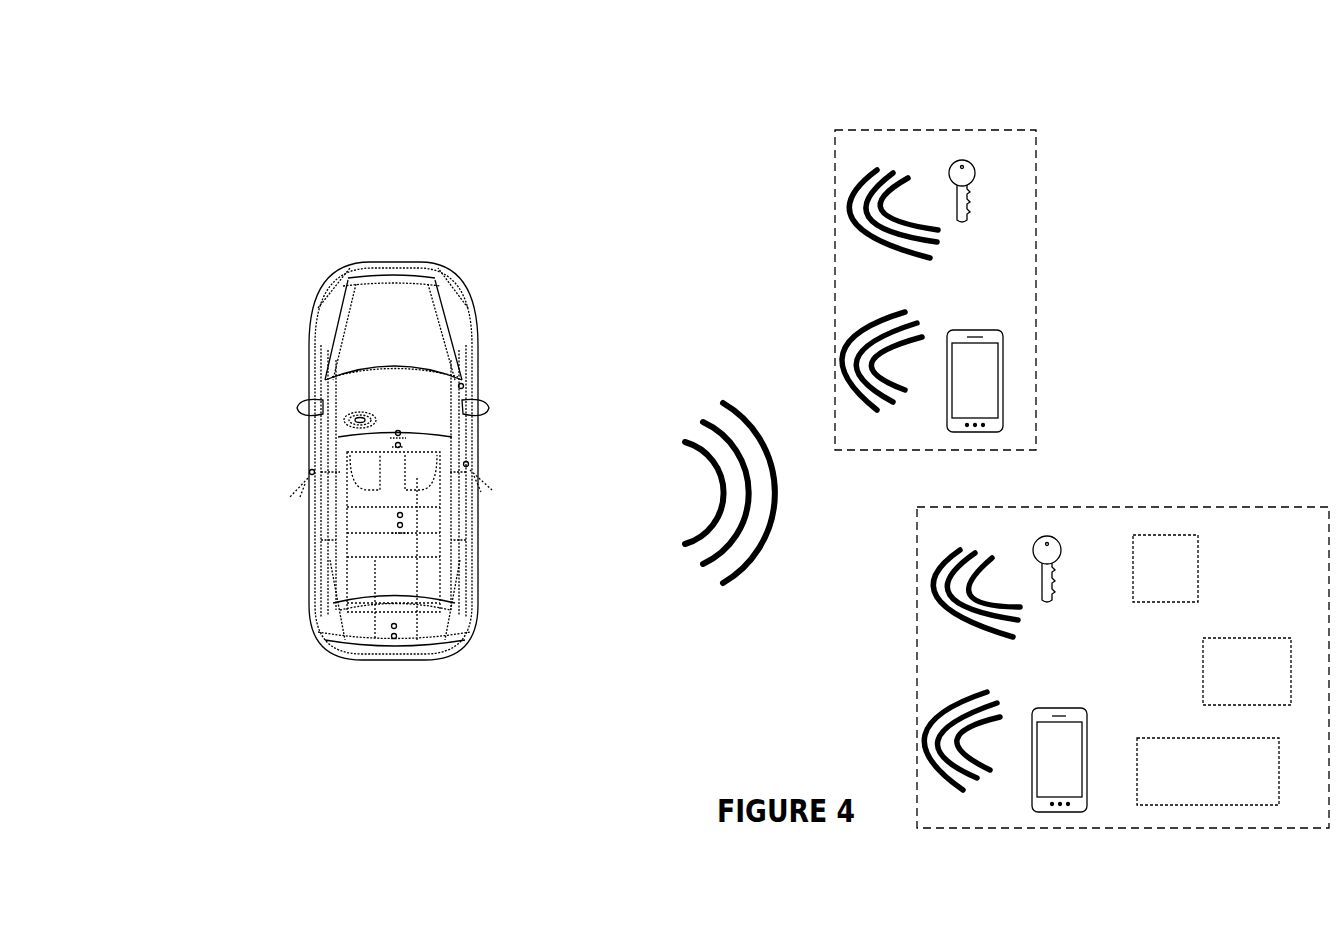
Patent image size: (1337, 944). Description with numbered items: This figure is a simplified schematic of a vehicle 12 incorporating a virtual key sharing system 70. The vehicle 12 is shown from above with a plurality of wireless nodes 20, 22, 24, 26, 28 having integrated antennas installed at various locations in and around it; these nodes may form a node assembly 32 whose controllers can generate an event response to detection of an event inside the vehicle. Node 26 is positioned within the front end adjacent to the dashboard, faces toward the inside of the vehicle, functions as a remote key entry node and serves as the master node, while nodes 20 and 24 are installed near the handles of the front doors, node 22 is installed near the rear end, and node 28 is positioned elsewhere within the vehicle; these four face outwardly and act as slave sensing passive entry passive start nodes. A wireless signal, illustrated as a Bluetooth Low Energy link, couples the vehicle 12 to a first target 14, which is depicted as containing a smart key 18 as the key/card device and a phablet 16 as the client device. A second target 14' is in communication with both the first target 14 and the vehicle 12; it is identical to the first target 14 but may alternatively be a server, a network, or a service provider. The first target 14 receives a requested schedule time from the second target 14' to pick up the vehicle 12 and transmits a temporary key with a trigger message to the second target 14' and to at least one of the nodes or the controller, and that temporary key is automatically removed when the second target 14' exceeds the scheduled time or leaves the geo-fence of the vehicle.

The vehicle 12 is at (310, 322).
The first target 14 is at (987, 248).
The second target 14' is at (1123, 630).
The phablet 16 is at (1008, 368).
The smart key 18 is at (993, 195).
The wireless node 20 is at (308, 478).
The wireless node 22 is at (407, 632).
The wireless node 24 is at (468, 462).
The wireless node 26 is at (398, 417).
The wireless node 28 is at (403, 525).
The node assembly 32 is at (457, 383).
The virtual key sharing system 70 is at (713, 148).